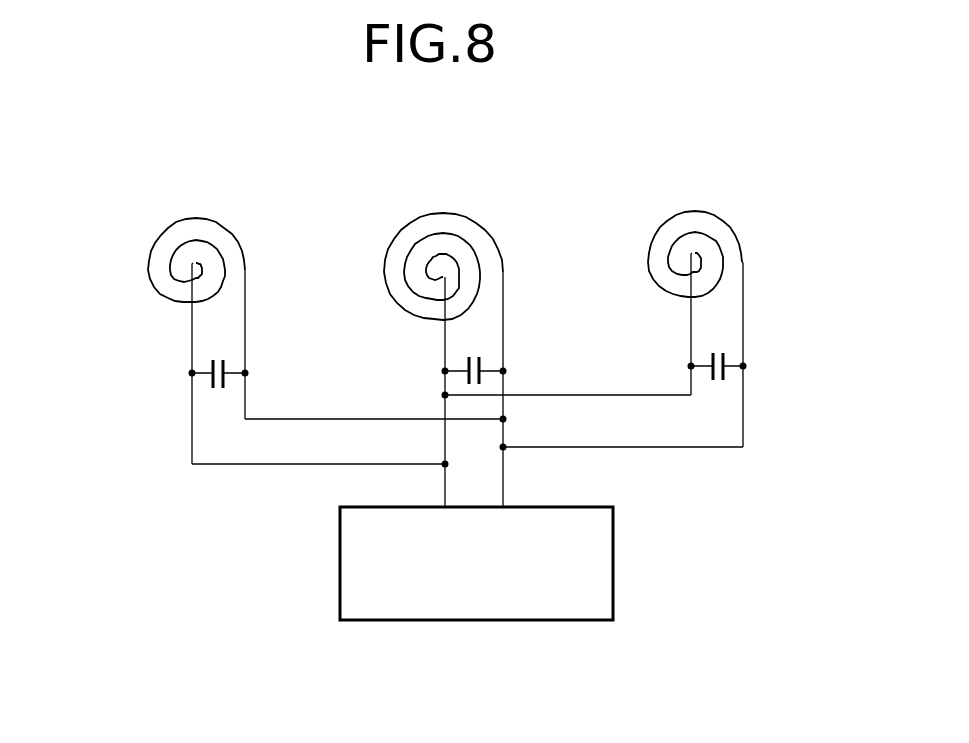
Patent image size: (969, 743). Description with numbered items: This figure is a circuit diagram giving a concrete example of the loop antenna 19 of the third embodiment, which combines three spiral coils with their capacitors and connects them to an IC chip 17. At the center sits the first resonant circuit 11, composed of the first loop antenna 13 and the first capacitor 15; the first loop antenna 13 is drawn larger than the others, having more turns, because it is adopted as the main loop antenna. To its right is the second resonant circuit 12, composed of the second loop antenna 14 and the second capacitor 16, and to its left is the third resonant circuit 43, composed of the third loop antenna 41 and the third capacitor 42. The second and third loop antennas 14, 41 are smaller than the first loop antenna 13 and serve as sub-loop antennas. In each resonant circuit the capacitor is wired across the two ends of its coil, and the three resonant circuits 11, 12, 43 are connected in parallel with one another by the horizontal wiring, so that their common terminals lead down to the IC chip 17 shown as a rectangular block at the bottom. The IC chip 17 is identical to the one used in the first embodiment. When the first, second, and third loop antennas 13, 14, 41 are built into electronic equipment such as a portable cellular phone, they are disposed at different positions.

The loop antenna 19 is at (522, 156).
The third resonant circuit 43 is at (143, 233).
The third loop antenna 41 is at (195, 218).
The third capacitor 42 is at (213, 365).
The first resonant circuit 11 is at (386, 219).
The first loop antenna 13 is at (445, 212).
The first capacitor 15 is at (487, 362).
The second resonant circuit 12 is at (641, 212).
The second loop antenna 14 is at (693, 210).
The second capacitor 16 is at (722, 361).
The IC chip 17 is at (613, 558).